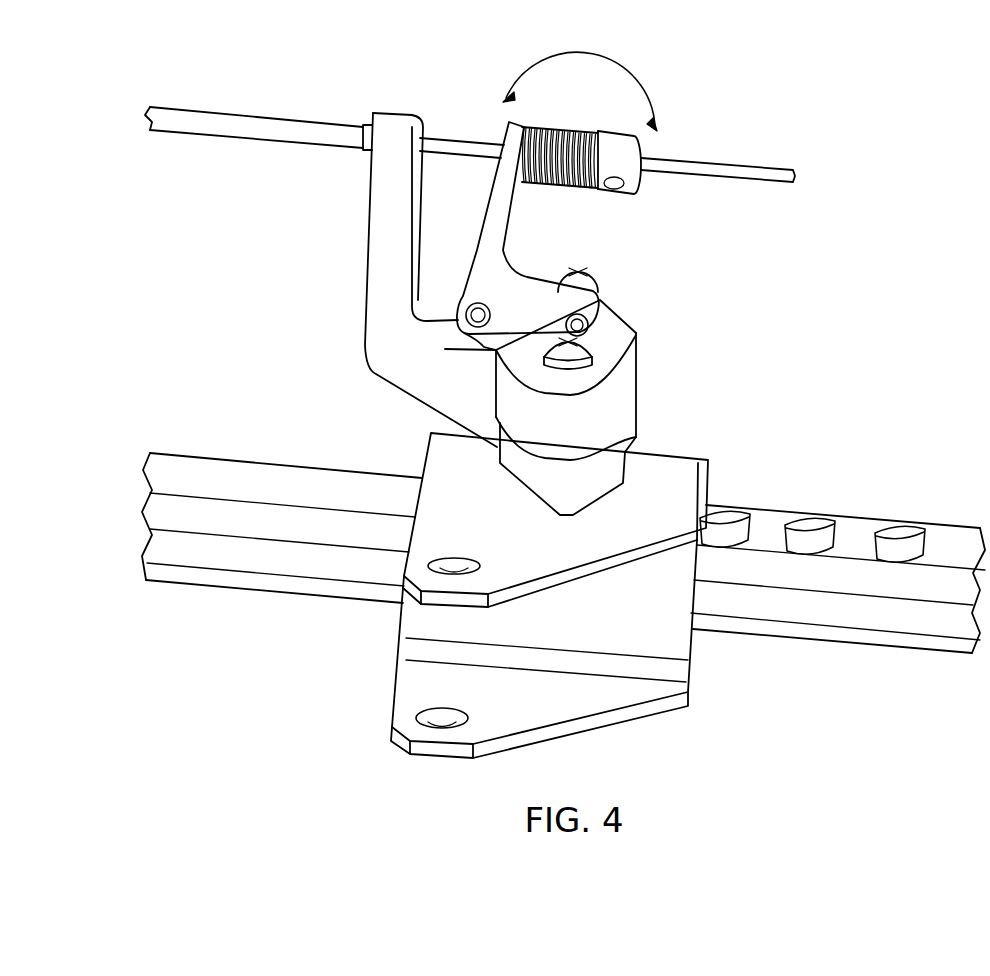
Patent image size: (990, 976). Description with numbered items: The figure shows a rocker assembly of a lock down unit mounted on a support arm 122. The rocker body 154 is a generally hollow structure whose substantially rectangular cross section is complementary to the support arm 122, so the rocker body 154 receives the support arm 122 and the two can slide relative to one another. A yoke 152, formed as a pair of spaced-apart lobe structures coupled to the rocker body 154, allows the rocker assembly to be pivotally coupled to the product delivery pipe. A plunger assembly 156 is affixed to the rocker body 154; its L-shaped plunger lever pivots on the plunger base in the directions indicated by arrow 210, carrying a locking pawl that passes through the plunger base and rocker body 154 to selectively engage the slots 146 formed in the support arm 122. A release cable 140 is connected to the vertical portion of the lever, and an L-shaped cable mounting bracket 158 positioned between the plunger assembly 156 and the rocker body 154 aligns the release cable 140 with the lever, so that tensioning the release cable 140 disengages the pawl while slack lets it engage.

The support arm 122 is at (300, 606).
The release cable 140 is at (353, 127).
The slots 146 is at (905, 528).
The yoke 152 is at (637, 720).
The rocker body 154 is at (566, 407).
The plunger assembly 156 is at (652, 278).
The cable mounting bracket 158 is at (362, 272).
The arrow 210 is at (598, 72).